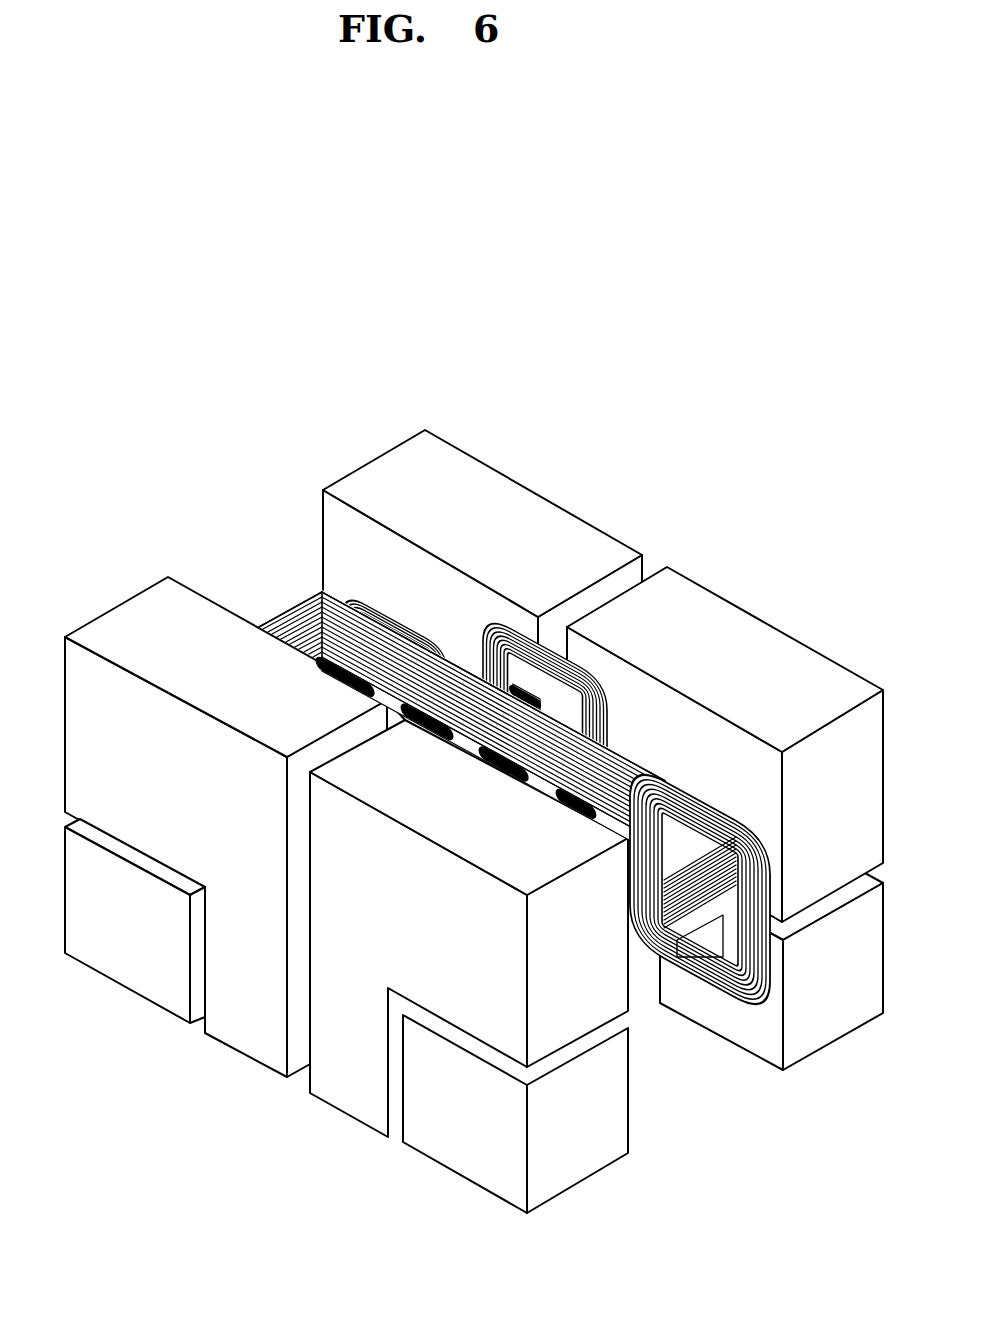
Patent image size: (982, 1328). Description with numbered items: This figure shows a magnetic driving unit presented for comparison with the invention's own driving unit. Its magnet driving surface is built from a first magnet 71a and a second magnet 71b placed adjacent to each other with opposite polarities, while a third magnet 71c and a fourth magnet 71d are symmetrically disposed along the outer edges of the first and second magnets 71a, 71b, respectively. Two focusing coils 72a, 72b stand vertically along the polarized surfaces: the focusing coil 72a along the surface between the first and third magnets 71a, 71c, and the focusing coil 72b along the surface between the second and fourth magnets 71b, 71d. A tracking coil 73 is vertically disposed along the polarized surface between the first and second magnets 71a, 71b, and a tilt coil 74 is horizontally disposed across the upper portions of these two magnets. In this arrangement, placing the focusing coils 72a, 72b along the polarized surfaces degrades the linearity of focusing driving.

The first magnet 71a is at (242, 1032).
The second magnet 71b is at (350, 1092).
The third magnet 71c is at (123, 963).
The fourth magnet 71d is at (445, 1145).
The focusing coil 72a is at (352, 597).
The focusing coil 72b is at (718, 975).
The tracking coil 73 is at (575, 628).
The tilt coil 74 is at (283, 620).